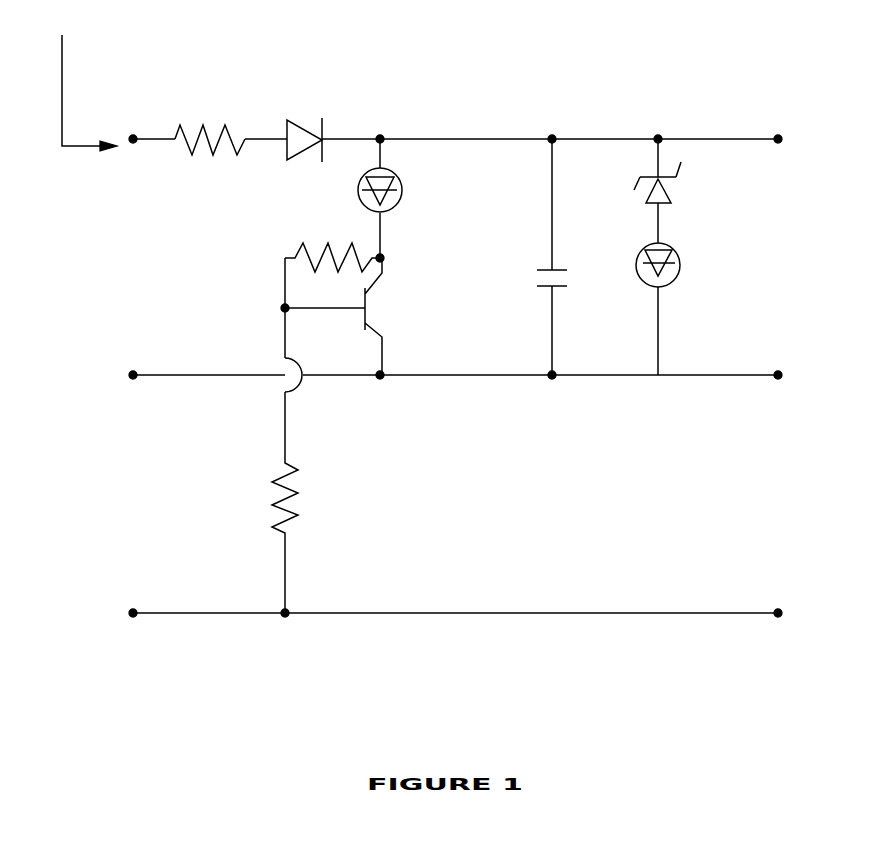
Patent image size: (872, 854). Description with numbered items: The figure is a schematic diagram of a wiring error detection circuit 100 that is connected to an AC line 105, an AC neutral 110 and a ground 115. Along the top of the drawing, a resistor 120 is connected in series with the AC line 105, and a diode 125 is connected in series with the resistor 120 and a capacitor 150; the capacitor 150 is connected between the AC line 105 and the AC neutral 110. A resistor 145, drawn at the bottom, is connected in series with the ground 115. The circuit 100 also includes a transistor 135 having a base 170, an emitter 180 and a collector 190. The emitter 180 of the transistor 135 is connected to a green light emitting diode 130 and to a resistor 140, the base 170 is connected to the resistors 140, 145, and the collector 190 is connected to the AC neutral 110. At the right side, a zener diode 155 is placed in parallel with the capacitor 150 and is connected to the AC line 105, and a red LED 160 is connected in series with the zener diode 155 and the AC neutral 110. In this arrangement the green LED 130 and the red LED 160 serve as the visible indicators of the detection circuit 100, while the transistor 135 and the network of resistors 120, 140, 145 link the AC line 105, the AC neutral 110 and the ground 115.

The wiring error detection circuit 100 is at (82, 80).
The AC line 105 is at (133, 139).
The AC neutral 110 is at (133, 375).
The ground 115 is at (133, 613).
The resistor 120 is at (205, 120).
The diode 125 is at (303, 120).
The green light emitting diode 130 is at (403, 178).
The transistor 135 is at (385, 307).
The resistor 140 is at (333, 240).
The resistor 145 is at (257, 507).
The capacitor 150 is at (537, 262).
The zener diode 155 is at (689, 180).
The red LED 160 is at (690, 266).
The base 170 is at (332, 310).
The emitter 180 is at (383, 267).
The collector 190 is at (383, 360).